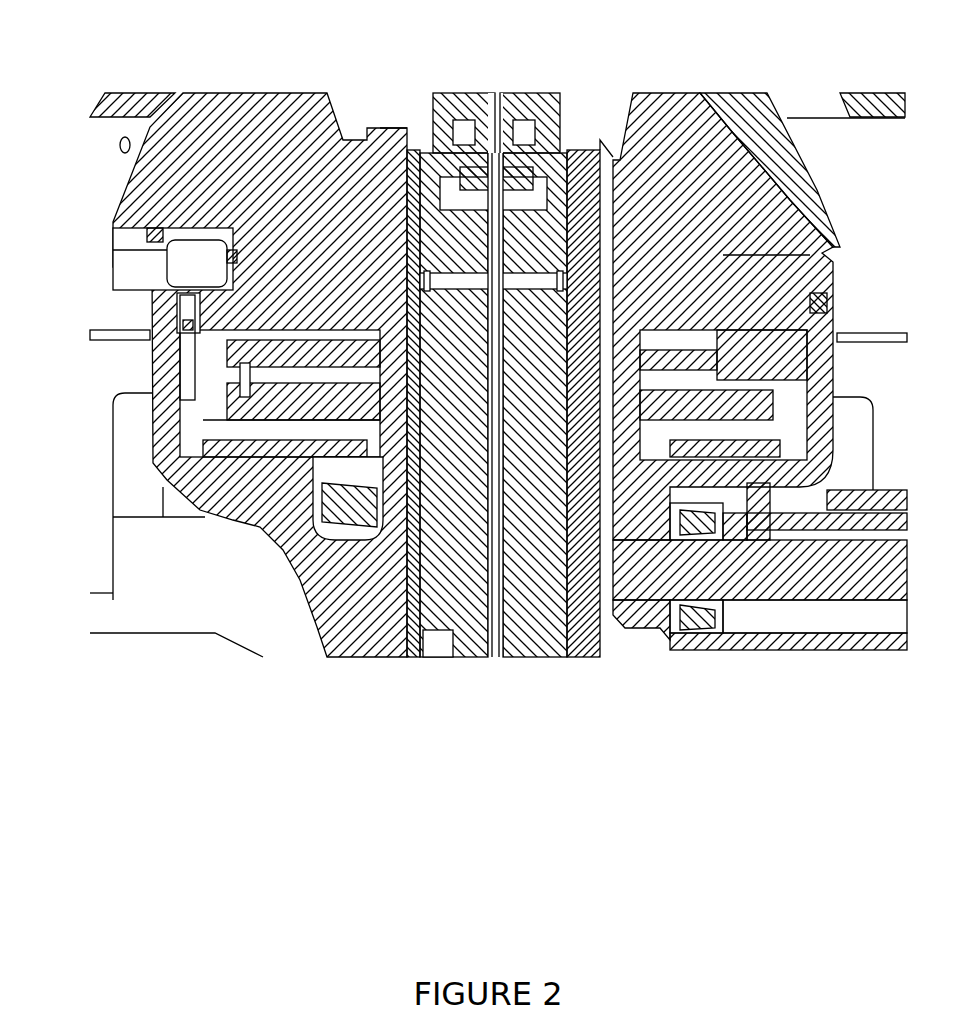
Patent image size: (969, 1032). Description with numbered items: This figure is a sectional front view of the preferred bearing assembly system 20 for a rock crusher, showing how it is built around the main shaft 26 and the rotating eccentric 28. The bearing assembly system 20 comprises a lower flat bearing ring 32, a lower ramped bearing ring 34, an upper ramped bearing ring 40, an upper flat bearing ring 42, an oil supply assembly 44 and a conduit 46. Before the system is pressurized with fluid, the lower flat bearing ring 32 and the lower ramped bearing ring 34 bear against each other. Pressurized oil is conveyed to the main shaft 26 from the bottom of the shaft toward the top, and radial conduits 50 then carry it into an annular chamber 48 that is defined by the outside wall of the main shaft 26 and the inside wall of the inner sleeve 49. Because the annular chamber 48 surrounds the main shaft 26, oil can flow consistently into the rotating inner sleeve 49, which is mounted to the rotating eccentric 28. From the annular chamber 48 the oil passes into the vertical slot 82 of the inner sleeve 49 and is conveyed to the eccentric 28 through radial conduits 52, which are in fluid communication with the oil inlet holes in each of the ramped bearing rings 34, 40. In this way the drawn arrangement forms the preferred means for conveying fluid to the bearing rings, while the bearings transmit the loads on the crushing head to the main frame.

The bearing assembly system 20 is at (230, 395).
The main shaft 26 is at (440, 577).
The eccentric 28 is at (355, 235).
The lower flat bearing ring 32 is at (263, 450).
The lower ramped bearing ring 34 is at (300, 435).
The upper ramped bearing ring 40 is at (730, 398).
The upper flat bearing ring 42 is at (700, 340).
The oil supply assembly 44 is at (523, 655).
The conduit 46 is at (523, 560).
The annular chamber 48 is at (600, 270).
The inner sleeve 49 is at (645, 170).
The radial conduits 50 is at (438, 330).
The radial conduits 52 is at (640, 407).
The vertical slot 82 is at (548, 330).